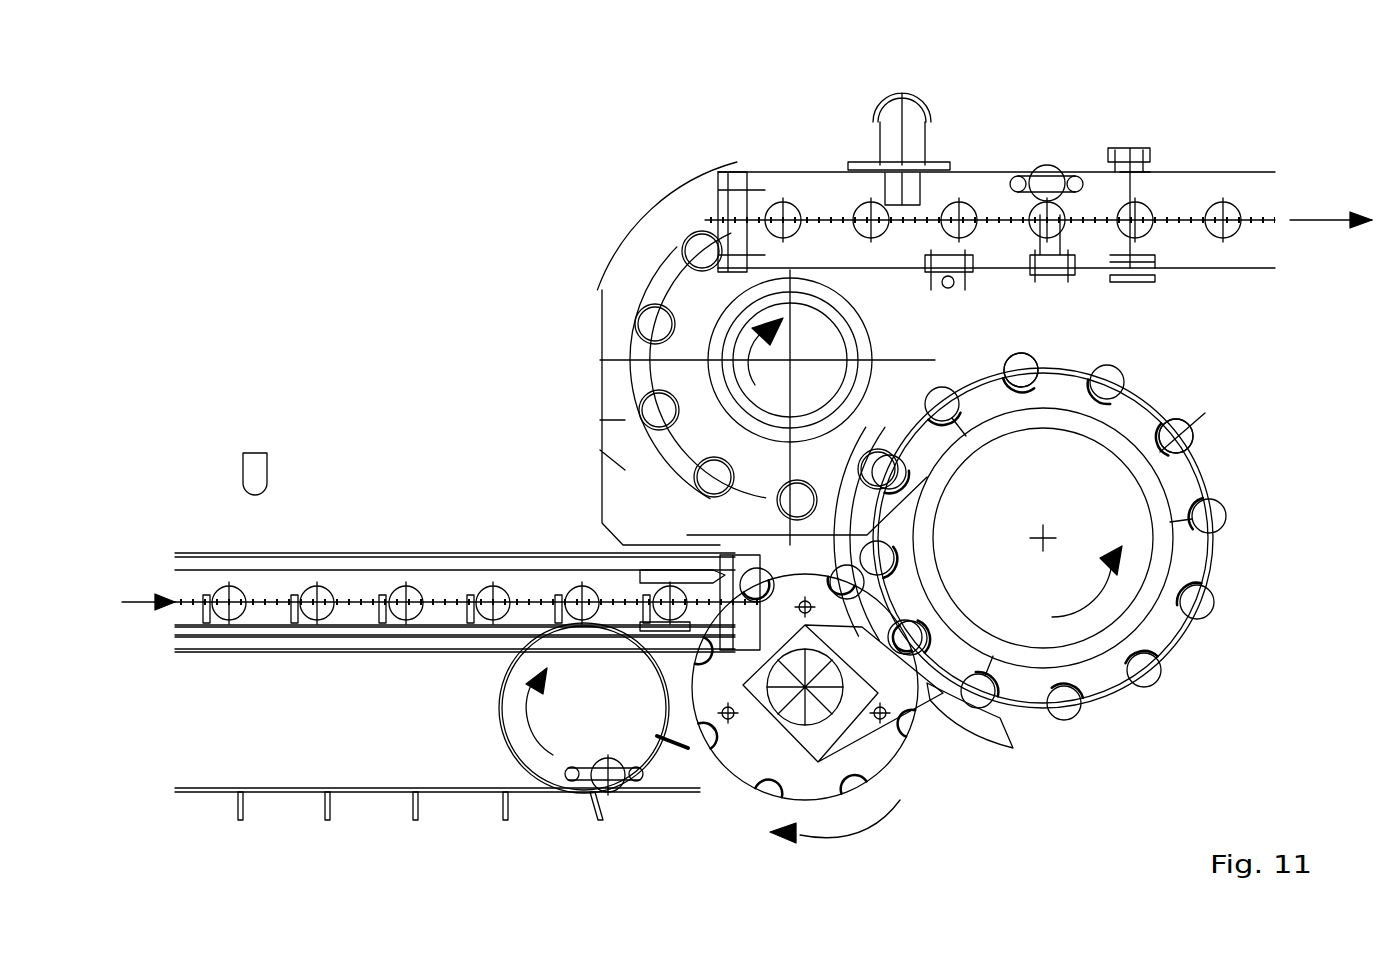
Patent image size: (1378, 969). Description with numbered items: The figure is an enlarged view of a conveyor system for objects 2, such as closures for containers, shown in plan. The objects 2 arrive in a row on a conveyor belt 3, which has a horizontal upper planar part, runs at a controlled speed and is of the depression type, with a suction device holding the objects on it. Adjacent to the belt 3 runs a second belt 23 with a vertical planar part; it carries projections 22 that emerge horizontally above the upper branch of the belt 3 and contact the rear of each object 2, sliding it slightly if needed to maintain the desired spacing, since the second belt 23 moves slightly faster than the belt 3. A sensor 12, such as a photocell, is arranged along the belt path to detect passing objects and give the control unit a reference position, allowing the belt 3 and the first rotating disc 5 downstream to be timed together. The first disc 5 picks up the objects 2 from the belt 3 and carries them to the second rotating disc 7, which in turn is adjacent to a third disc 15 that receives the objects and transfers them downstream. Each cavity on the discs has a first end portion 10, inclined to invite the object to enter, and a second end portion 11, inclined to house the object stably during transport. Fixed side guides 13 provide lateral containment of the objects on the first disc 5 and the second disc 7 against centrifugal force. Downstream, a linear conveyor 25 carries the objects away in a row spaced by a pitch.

The objects 2 is at (353, 555).
The conveyor belt 3 is at (448, 557).
The first rotating disc 5 is at (905, 755).
The second rotating disc 7 is at (1103, 678).
The first end portion 10 is at (1153, 410).
The second end portion 11 is at (1195, 433).
The sensor 12 is at (250, 462).
The fixed side guide 13 is at (612, 308).
The third disc 15 is at (690, 285).
The projections 22 is at (300, 558).
The second belt 23 is at (265, 627).
The linear conveyor 25 is at (978, 142).